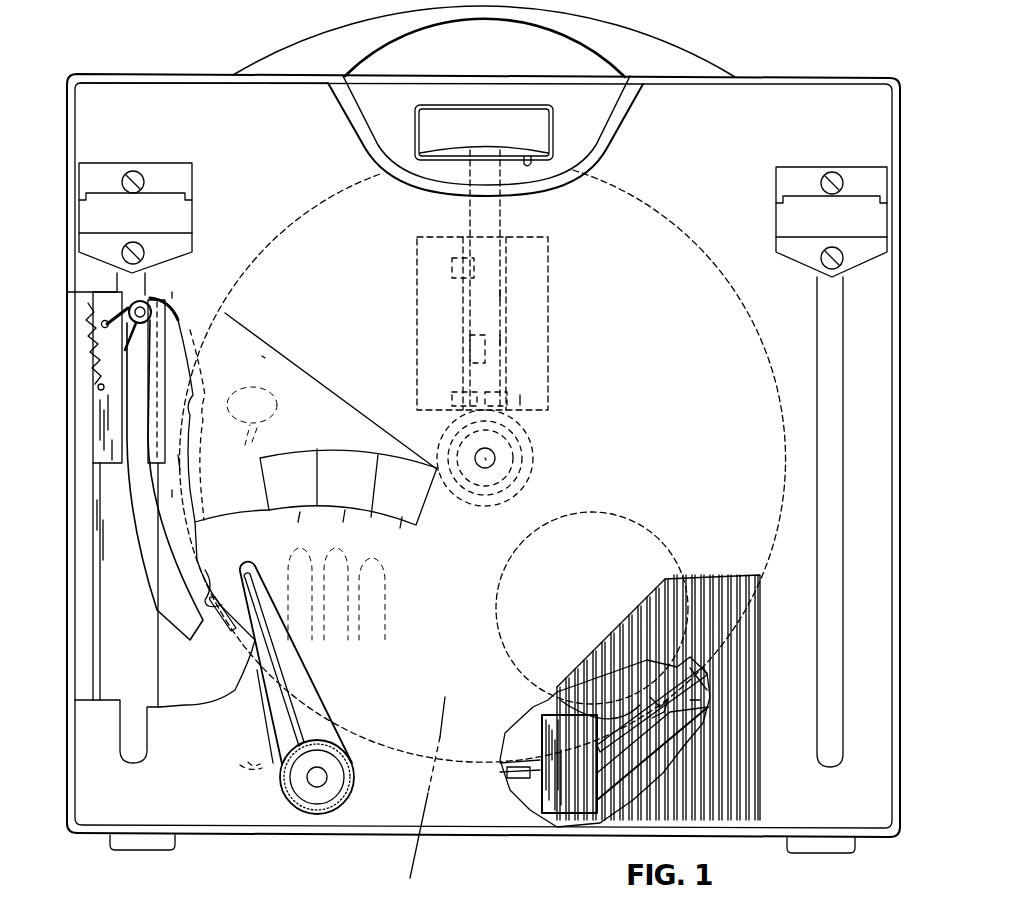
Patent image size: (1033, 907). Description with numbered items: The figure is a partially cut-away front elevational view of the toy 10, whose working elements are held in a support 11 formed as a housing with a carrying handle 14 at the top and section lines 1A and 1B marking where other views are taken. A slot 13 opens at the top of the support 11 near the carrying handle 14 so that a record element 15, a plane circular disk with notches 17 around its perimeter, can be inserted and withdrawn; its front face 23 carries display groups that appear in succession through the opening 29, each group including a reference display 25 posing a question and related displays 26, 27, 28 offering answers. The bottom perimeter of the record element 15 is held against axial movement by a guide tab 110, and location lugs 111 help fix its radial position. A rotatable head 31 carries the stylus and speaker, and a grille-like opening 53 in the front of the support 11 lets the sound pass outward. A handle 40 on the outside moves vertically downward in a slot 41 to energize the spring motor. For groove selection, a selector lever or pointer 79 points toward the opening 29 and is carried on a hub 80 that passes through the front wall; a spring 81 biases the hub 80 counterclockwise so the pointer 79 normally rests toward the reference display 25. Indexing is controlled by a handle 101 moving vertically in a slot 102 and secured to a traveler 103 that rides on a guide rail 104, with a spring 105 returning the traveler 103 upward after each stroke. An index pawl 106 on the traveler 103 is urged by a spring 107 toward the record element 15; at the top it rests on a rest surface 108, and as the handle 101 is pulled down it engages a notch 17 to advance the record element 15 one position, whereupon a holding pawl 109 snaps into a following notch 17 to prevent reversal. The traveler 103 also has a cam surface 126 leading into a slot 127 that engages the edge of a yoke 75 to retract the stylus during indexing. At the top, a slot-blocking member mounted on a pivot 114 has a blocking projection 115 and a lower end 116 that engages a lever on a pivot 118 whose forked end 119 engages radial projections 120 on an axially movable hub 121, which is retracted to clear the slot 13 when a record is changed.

The toy 10 is at (800, 66).
The support 11 is at (75, 299).
The slot 13 is at (360, 115).
The carrying handle 14 is at (707, 60).
The record element 15 is at (666, 206).
The notches 17 is at (725, 270).
The front face 23 is at (340, 445).
The reference display 25 is at (290, 405).
The related display 26 is at (299, 526).
The related display 27 is at (349, 527).
The related display 28 is at (412, 532).
The opening 29 is at (275, 355).
The rotatable head 31 is at (652, 538).
The handle 40 is at (846, 207).
The slot 41 is at (837, 330).
The grille-like opening 53 is at (750, 670).
The yoke 75 is at (706, 693).
The selector lever 79 is at (300, 684).
The hub 80 is at (324, 777).
The spring 81 is at (262, 772).
The handle 101 is at (182, 212).
The slot 102 is at (150, 287).
The traveler 103 is at (105, 434).
The guide rail 104 is at (106, 508).
The spring 105 is at (95, 375).
The index pawl 106 is at (155, 568).
The spring 107 is at (103, 325).
The rest surface 108 is at (222, 590).
The holding pawl 109 is at (652, 753).
The guide tab 110 is at (560, 818).
The location lugs 111 is at (522, 780).
The pivot 114 is at (520, 258).
The blocking projection 115 is at (502, 136).
The lower end 116 is at (500, 315).
The pivot 118 is at (510, 398).
The forked end 119 is at (500, 340).
The radial projections 120 is at (512, 474).
The hub 121 is at (483, 462).
The cam surface 126 is at (178, 462).
The slot 127 is at (170, 331).
The section line 1A is at (445, 697).
The section line 1B is at (178, 291).